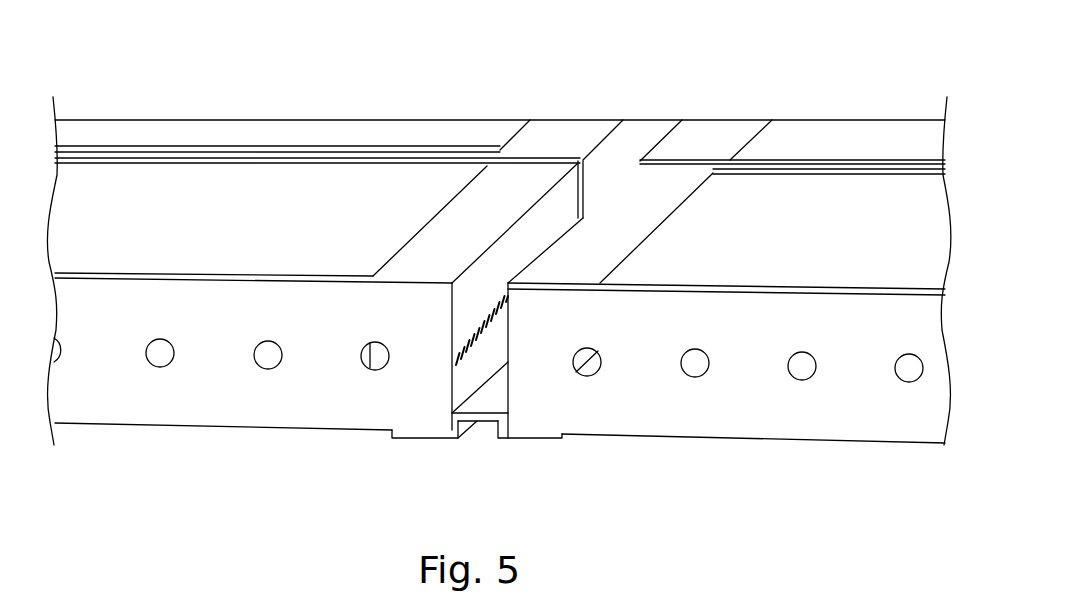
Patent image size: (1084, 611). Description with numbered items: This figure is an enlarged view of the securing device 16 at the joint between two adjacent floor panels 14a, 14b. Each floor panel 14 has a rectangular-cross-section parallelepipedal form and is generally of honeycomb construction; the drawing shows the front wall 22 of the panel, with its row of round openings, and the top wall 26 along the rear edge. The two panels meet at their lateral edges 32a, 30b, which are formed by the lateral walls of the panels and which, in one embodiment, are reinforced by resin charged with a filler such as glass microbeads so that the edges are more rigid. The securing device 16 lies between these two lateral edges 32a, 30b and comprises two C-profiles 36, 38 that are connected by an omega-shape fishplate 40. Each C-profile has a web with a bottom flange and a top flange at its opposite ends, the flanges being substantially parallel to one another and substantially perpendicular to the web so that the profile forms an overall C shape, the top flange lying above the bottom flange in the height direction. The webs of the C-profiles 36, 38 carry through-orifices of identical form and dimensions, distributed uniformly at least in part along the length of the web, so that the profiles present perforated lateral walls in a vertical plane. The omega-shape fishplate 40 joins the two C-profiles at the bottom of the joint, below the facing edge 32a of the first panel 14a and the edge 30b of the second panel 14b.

The floor panel 14 is at (777, 145).
The adjacent panel 14a is at (235, 257).
The adjacent panel 14b is at (843, 285).
The securing device 16 is at (420, 438).
The front wall 22 is at (780, 407).
The top wall 26 is at (838, 200).
The lateral edge 30b is at (507, 382).
The lateral edge 32a is at (465, 300).
The C-profile 36 is at (405, 267).
The C-profile 38 is at (610, 288).
The omega-shape fishplate 40 is at (567, 440).